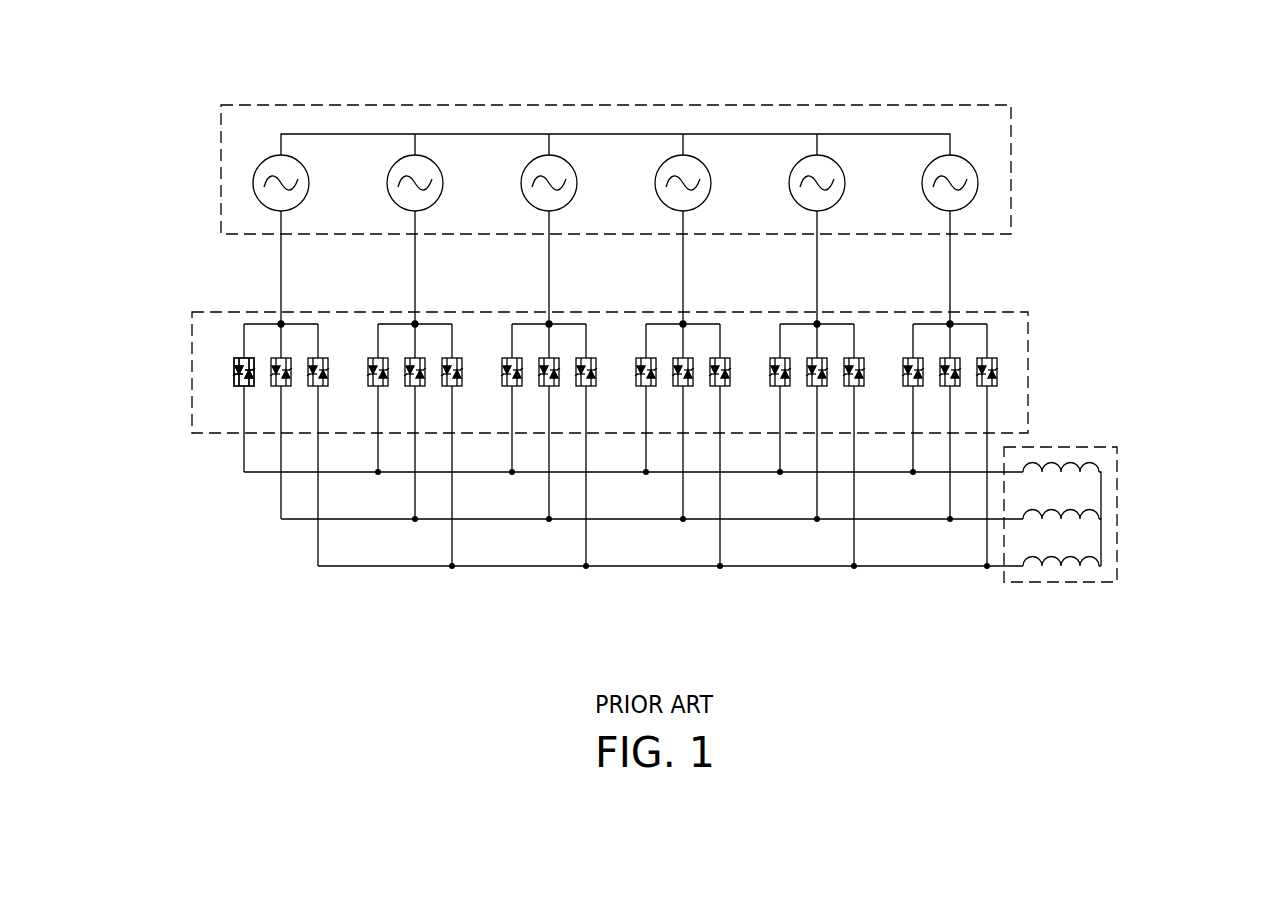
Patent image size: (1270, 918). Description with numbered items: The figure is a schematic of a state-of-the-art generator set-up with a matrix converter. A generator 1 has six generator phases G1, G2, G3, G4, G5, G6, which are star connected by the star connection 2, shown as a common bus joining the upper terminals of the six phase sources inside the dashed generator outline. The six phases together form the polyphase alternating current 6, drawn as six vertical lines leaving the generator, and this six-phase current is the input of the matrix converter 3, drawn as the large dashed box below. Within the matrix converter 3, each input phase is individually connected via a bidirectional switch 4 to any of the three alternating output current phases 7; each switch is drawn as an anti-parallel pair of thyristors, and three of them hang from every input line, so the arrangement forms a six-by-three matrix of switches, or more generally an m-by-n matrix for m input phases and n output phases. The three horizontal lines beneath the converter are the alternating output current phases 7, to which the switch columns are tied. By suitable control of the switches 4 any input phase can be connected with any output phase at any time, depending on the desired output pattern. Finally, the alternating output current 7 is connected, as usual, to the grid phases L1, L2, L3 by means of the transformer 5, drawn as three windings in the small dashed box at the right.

The generator 1 is at (1011, 181).
The star connection 2 is at (950, 146).
The matrix converter 3 is at (1028, 340).
The bidirectional switch 4 is at (237, 352).
The transformer 5 is at (1109, 545).
The polyphase alternating current 6 is at (281, 272).
The alternating output current phases 7 is at (352, 476).
The generator phase G1 is at (268, 155).
The generator phase G2 is at (402, 155).
The generator phase G3 is at (536, 155).
The generator phase G4 is at (670, 155).
The generator phase G5 is at (804, 155).
The generator phase G6 is at (937, 155).
The grid phase L1 is at (1098, 480).
The grid phase L2 is at (1098, 527).
The grid phase L3 is at (1098, 574).